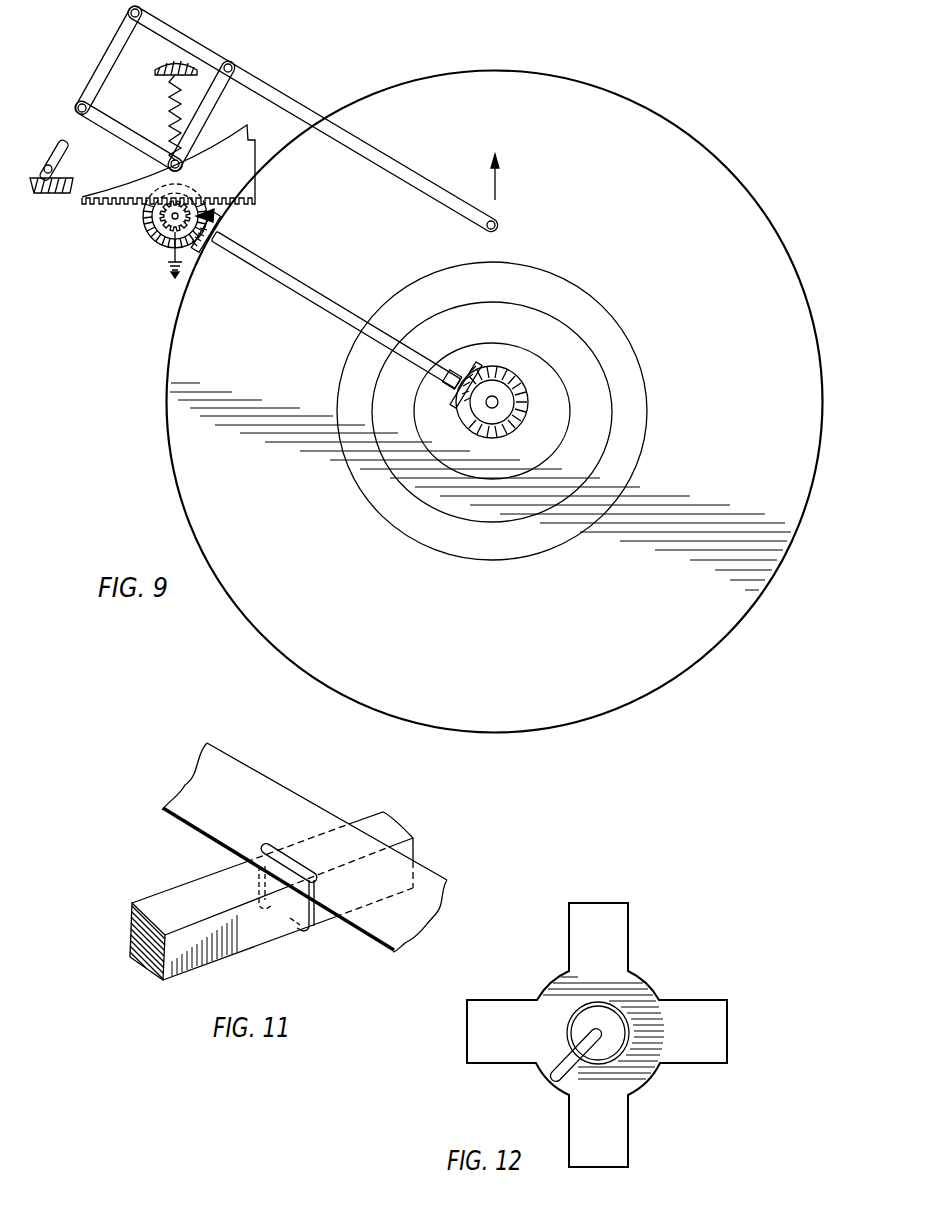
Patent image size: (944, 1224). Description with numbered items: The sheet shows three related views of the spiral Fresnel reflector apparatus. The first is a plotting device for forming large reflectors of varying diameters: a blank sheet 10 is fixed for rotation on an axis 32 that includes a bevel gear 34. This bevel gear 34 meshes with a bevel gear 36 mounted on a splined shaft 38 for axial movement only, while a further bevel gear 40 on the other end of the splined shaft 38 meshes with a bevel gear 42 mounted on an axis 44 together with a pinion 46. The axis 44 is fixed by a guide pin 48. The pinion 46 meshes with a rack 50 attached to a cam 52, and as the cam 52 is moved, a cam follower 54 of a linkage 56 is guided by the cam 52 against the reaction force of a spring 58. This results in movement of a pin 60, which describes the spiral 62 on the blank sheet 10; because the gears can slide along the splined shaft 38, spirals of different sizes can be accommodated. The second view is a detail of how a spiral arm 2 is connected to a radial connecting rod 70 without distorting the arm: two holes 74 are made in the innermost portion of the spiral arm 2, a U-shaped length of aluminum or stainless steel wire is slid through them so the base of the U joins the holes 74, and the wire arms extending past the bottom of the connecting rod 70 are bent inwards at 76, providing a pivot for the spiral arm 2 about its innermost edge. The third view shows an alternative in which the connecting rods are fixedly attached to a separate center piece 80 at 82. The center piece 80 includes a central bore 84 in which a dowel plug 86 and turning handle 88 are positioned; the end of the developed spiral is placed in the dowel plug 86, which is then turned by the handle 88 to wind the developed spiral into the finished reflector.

In FIG. 9, the blank sheet 10 is at (722, 177).
In FIG. 9, the spiral 62 is at (648, 413).
In FIG. 9, the axis 32 is at (499, 403).
In FIG. 9, the bevel gear 34 is at (505, 377).
In FIG. 9, the bevel gear 36 is at (462, 405).
In FIG. 9, the splined shaft 38 is at (313, 297).
In FIG. 9, the bevel gear 40 is at (195, 250).
In FIG. 9, the bevel gear 42 is at (160, 238).
In FIG. 9, the axis 44 is at (162, 219).
In FIG. 9, the pinion 46 is at (218, 227).
In FIG. 9, the guide pin 48 is at (167, 266).
In FIG. 9, the rack 50 is at (248, 202).
In FIG. 9, the cam 52 is at (233, 167).
In FIG. 9, the cam follower 54 is at (168, 166).
In FIG. 9, the linkage 56 is at (280, 97).
In FIG. 9, the spring 58 is at (172, 100).
In FIG. 9, the pin 60 is at (497, 223).
In FIG. 11, the spiral arm 2 is at (273, 783).
In FIG. 11, the connecting rod 70 is at (173, 903).
In FIG. 11, the holes 74 is at (263, 850).
In FIG. 11, the bent wire arms 76 is at (303, 933).
In FIG. 12, the center piece 80 is at (643, 985).
In FIG. 12, the attachment location 82 is at (727, 1038).
In FIG. 12, the central bore 84 is at (613, 1062).
In FIG. 12, the dowel plug 86 is at (585, 1018).
In FIG. 12, the turning handle 88 is at (558, 1062).